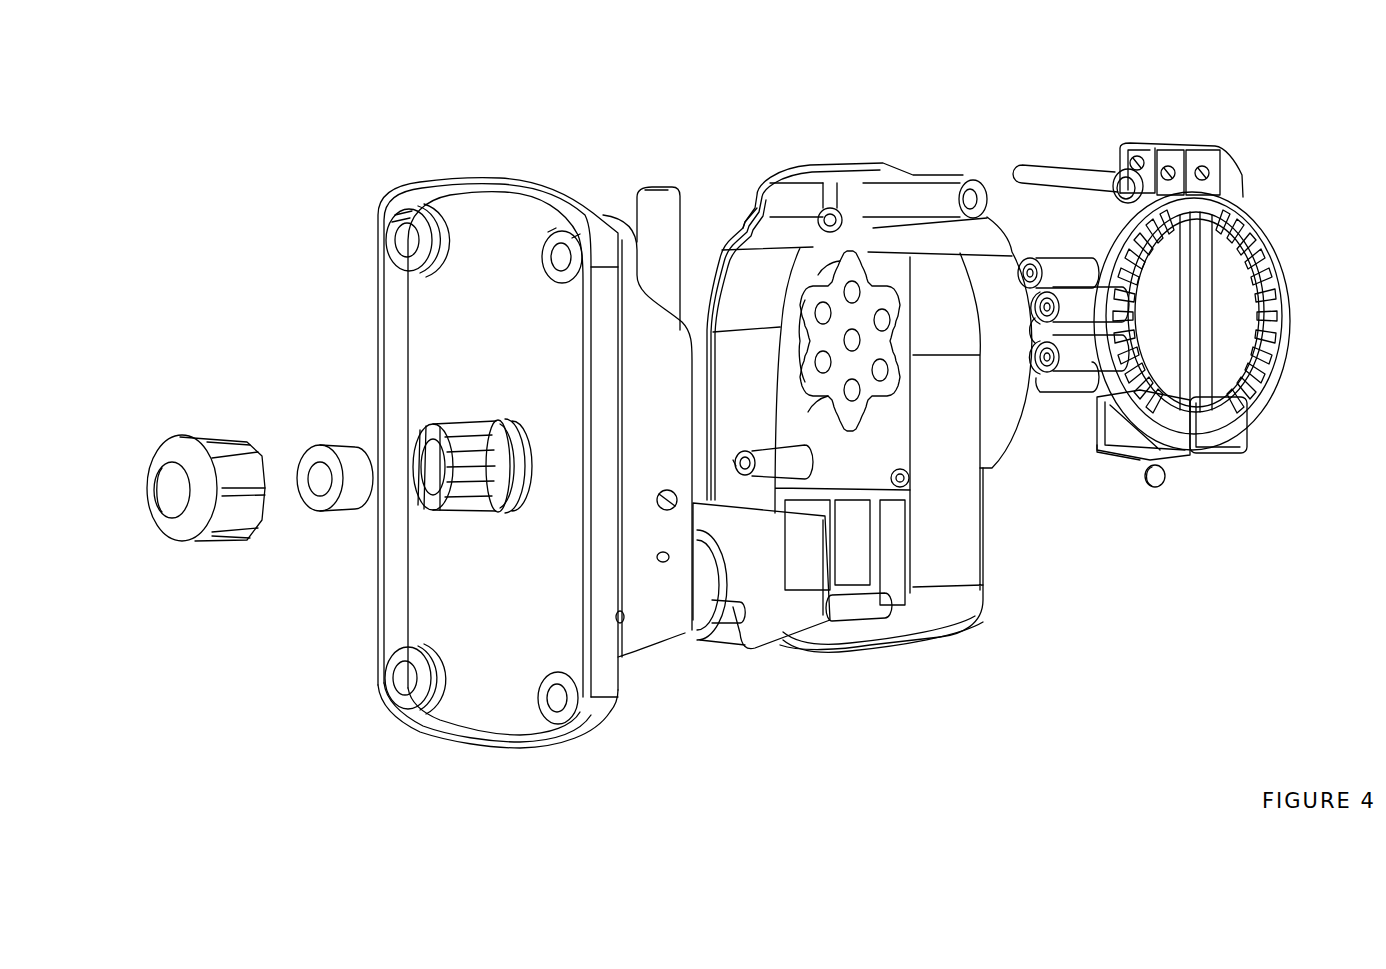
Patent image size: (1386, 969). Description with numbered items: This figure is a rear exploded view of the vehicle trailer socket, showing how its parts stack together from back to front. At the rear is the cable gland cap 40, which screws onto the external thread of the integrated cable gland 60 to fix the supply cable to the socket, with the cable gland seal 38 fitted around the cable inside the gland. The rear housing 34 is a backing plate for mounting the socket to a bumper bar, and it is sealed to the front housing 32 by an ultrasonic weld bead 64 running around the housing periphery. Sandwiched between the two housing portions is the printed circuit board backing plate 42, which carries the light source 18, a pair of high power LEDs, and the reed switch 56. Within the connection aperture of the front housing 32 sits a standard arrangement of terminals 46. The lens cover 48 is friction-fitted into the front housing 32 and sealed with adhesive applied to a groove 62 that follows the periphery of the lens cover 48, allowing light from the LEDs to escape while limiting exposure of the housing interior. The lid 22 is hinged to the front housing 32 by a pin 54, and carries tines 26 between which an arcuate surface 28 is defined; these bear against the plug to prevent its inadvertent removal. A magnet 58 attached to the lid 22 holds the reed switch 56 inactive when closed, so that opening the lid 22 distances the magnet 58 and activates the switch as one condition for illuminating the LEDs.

The light source 18 is at (692, 642).
The lid 22 is at (1197, 148).
The tines 26 is at (1218, 430).
The arcuate surface 28 is at (1172, 458).
The front housing 32 is at (879, 163).
The rear housing 34 is at (425, 742).
The cable gland seal 38 is at (318, 512).
The cable gland cap 40 is at (200, 542).
The printed circuit board backing plate 42 is at (613, 212).
The terminals 46 is at (1050, 395).
The lens cover 48 is at (762, 648).
The pin 54 is at (1093, 168).
The reed switch 56 is at (676, 187).
The magnet 58 is at (1155, 487).
The integrated cable gland 60 is at (487, 515).
The groove 62 is at (817, 290).
The ultrasonic weld bead 64 is at (755, 208).